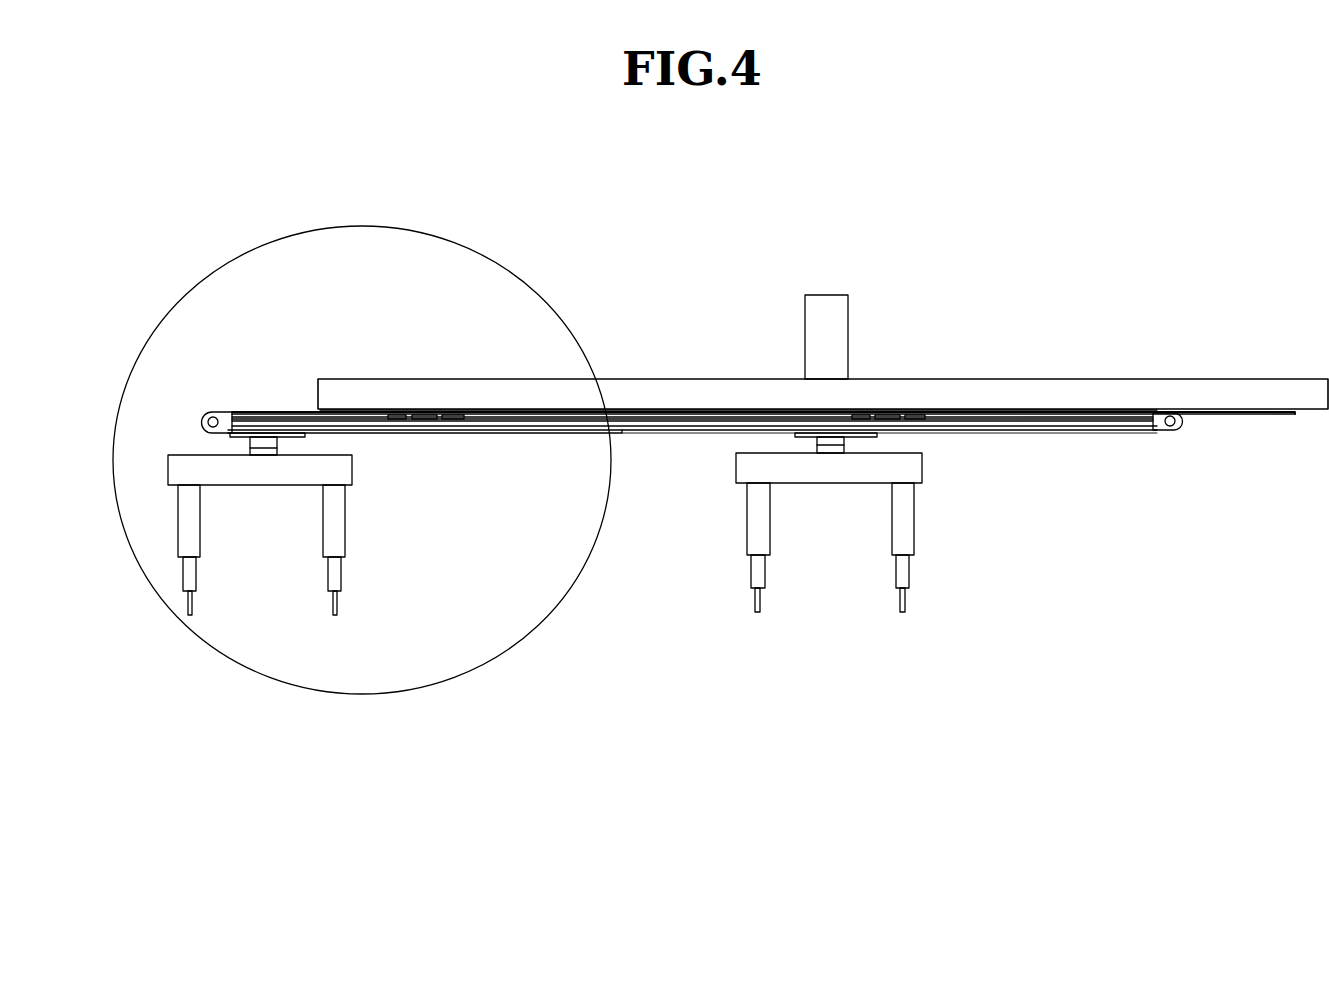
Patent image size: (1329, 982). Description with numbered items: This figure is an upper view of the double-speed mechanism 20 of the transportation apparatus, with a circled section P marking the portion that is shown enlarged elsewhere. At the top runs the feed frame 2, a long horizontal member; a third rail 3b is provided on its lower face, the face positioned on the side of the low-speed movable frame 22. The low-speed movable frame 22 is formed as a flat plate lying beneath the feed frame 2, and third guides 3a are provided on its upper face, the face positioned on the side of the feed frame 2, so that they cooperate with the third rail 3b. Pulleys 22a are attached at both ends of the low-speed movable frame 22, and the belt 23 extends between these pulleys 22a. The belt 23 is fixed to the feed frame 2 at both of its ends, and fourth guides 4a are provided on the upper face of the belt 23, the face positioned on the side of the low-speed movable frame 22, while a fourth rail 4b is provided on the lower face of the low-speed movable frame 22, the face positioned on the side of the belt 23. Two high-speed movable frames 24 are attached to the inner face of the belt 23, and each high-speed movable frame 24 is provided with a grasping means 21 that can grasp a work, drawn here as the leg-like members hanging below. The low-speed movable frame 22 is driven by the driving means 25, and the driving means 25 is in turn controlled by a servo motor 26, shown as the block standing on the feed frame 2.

The feed frame 2 is at (1298, 384).
The third guides 3a is at (404, 416).
The third rail 3b is at (510, 413).
The fourth guides 4a is at (283, 430).
The fourth rail 4b is at (570, 433).
The double-speed mechanism 20 is at (1084, 539).
The grasping means 21 is at (340, 566).
The low-speed movable frame 22 is at (630, 437).
The pulleys 22a is at (1170, 432).
The belt 23 is at (283, 412).
The high-speed movable frames 24 is at (230, 436).
The driving means 25 is at (646, 412).
The servo motor 26 is at (828, 305).
The section P is at (551, 616).